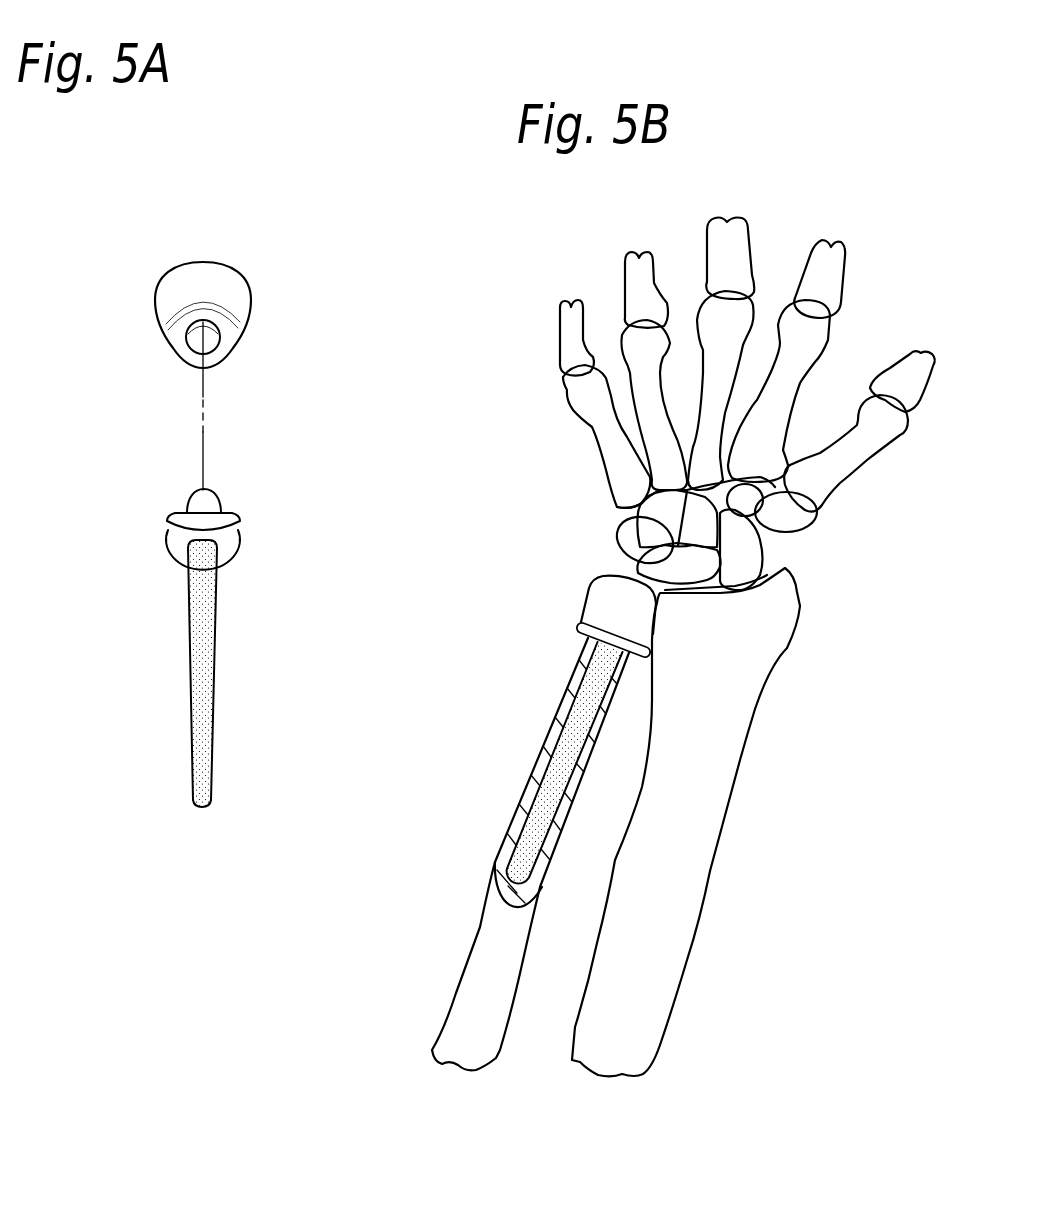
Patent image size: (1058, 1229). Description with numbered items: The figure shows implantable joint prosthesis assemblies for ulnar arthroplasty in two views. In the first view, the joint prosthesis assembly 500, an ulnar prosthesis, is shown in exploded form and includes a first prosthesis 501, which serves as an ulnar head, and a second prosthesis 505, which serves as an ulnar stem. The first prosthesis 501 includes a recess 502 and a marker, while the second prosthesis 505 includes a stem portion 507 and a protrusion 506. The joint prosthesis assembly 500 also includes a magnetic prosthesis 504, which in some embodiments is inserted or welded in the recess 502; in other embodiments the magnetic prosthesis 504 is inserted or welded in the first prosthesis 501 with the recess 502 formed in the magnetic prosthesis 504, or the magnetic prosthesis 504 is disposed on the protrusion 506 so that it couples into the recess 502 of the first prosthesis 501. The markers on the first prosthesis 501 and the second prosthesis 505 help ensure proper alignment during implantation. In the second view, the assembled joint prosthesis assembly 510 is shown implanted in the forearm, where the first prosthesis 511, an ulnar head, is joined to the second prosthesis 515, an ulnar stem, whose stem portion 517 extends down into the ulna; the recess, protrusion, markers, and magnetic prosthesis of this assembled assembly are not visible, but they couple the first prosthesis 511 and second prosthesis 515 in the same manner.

In FIG. 5A, the joint prosthesis assembly 500 is at (132, 200).
In FIG. 5A, the first prosthesis 501 is at (258, 245).
In FIG. 5A, the recess 502 is at (192, 348).
In FIG. 5A, the magnetic prosthesis 504 is at (214, 348).
In FIG. 5A, the second prosthesis 505 is at (148, 630).
In FIG. 5A, the protrusion 506 is at (184, 503).
In FIG. 5A, the stem portion 507 is at (206, 626).
In FIG. 5B, the joint prosthesis assembly 510 is at (430, 915).
In FIG. 5B, the first prosthesis 511 is at (598, 580).
In FIG. 5B, the second prosthesis 515 is at (540, 640).
In FIG. 5B, the stem portion 517 is at (535, 783).